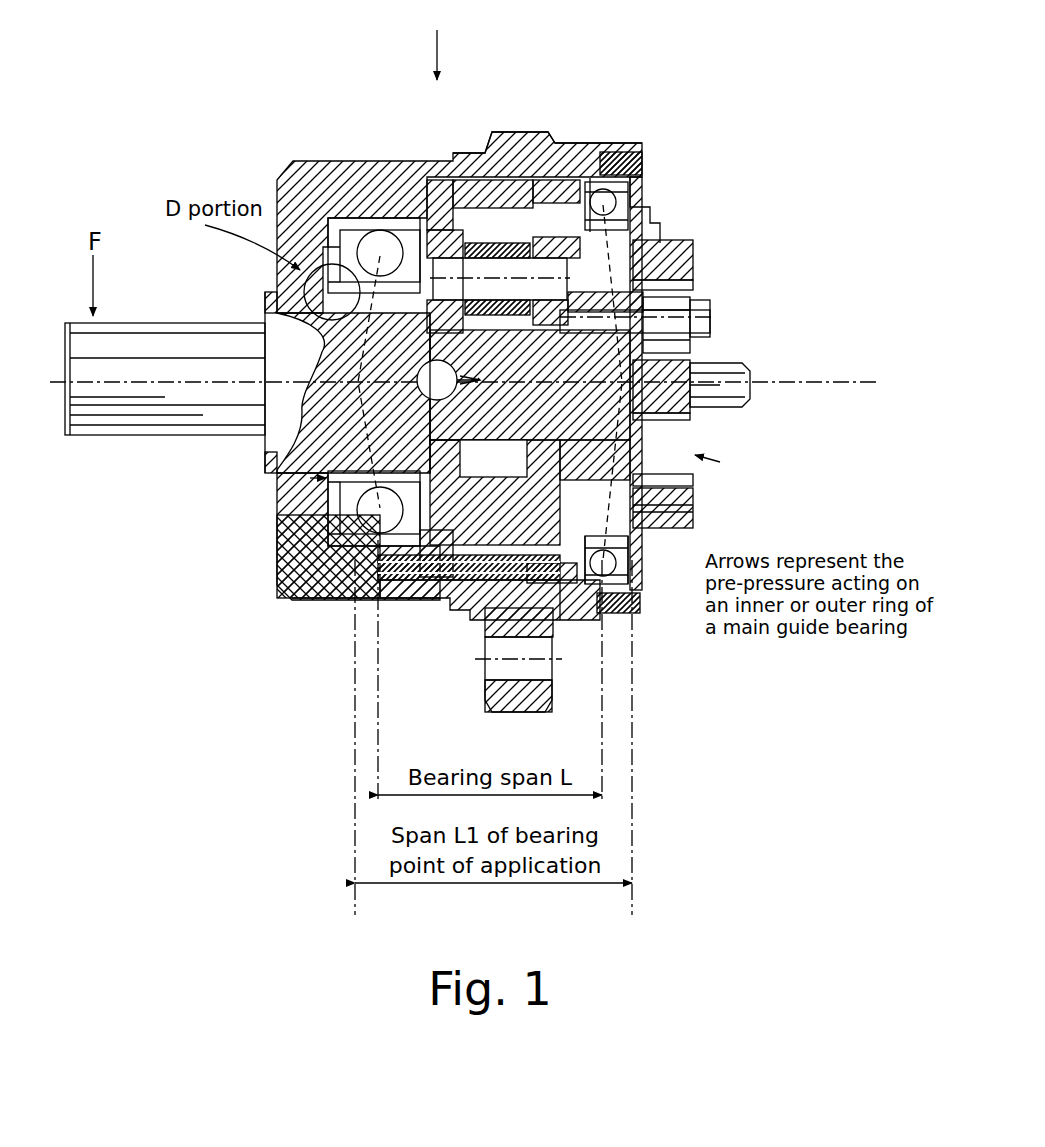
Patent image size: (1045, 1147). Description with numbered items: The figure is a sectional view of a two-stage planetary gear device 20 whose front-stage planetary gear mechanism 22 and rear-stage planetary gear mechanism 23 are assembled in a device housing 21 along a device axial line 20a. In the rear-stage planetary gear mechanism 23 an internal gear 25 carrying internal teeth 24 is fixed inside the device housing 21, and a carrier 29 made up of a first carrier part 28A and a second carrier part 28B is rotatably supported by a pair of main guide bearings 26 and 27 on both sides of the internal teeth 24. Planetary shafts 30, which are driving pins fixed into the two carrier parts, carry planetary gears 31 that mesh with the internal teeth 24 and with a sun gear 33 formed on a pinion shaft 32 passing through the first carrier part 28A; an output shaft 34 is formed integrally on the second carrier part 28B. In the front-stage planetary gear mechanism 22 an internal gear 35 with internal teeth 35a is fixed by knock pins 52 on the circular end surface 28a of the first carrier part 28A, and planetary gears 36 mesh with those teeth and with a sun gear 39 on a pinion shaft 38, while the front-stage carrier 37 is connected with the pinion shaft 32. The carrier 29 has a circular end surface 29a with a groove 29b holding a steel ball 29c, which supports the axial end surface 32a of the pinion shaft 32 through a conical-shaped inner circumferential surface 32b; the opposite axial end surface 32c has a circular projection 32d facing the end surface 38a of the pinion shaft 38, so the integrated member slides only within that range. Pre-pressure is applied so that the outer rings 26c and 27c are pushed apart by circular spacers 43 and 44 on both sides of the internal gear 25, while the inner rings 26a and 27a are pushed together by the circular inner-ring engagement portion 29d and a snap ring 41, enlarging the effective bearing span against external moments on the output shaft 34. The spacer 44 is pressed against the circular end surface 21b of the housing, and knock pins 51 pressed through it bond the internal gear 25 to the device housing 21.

The two-stage planetary gear device 20 is at (455, 25).
The device axial line 20a is at (148, 382).
The device housing 21 is at (482, 155).
The circular end surface 21b is at (425, 190).
The front-stage planetary gear mechanism 22 is at (660, 480).
The rear-stage planetary gear mechanism 23 is at (290, 135).
The internal teeth 24 is at (515, 190).
The internal gear 25 is at (548, 210).
The main guide bearing 26 is at (618, 585).
The inner ring 26a is at (640, 570).
The outer ring 26c is at (605, 585).
The main guide bearing 27 is at (345, 535).
The inner ring 27a is at (338, 512).
The outer ring 27c is at (320, 572).
The circular end surface 28a is at (660, 240).
The first carrier part 28A is at (622, 612).
The second carrier part 28B is at (425, 585).
The carrier 29 is at (495, 625).
The circular end surface 29a is at (460, 455).
The groove 29b is at (430, 325).
The steel ball 29c is at (448, 380).
The circular inner-ring engagement portion 29d is at (648, 215).
The planetary shafts 30 is at (600, 192).
The planetary gears 31 is at (460, 185).
The pinion shaft 32 is at (528, 387).
The axial end surface 32a is at (460, 300).
The conical-shaped inner circumferential surface 32b is at (495, 320).
The axial end surface 32c is at (650, 425).
The circular projection 32d is at (600, 318).
The sun gear 33 is at (493, 458).
The output shaft 34 is at (140, 345).
The internal gear 35 is at (690, 260).
The internal teeth 35a is at (690, 286).
The planetary gears 36 is at (700, 350).
The carrier 37 is at (740, 468).
The pinion shaft 38 is at (745, 375).
The end surface 38a is at (661, 386).
The sun gear 39 is at (700, 412).
The snap ring 41 is at (318, 288).
The circular spacer 43 is at (565, 625).
The circular spacer 44 is at (447, 582).
The knock pins 51 is at (340, 600).
The knock pins 52 is at (685, 505).